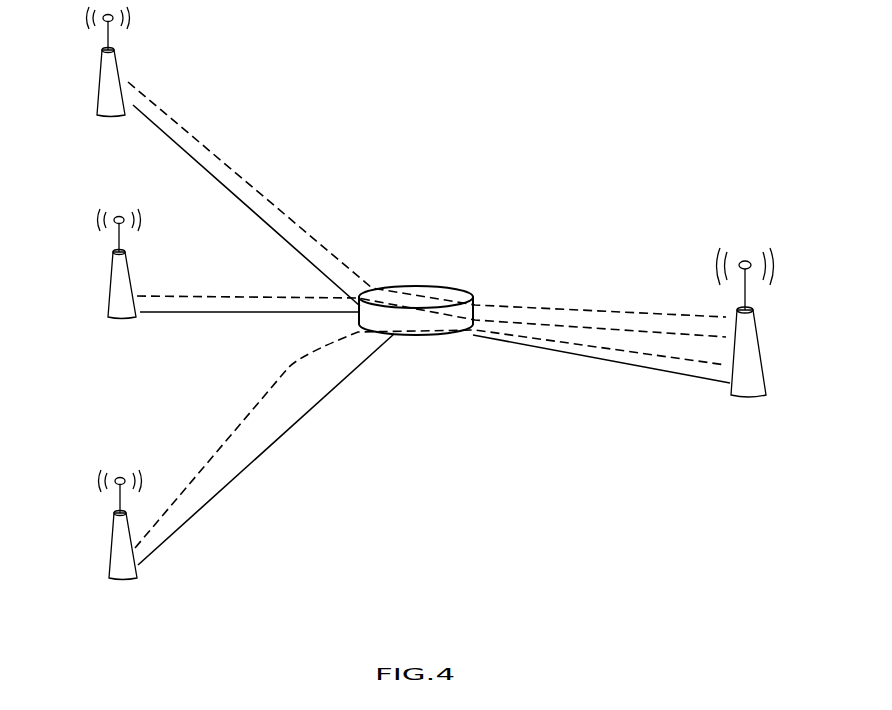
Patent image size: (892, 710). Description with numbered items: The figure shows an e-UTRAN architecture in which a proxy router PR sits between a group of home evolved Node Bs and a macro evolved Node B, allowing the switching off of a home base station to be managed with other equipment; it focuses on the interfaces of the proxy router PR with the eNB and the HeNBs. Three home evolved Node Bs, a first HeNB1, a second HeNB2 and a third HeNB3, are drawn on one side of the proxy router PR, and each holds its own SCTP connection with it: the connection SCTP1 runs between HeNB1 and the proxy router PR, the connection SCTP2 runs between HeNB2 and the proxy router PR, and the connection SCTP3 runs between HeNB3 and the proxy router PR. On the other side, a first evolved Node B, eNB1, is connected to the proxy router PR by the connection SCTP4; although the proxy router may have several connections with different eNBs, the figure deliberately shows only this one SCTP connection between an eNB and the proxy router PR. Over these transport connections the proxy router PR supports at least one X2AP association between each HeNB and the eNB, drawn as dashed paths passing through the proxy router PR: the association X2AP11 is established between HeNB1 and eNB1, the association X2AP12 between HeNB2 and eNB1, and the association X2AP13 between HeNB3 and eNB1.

The first HeNB HeNB1 is at (98, 118).
The second HeNB HeNB2 is at (106, 322).
The third HeNB HeNB3 is at (107, 578).
The first eNB eNB1 is at (770, 365).
The proxy router PR is at (411, 288).
The SCTP connection SCTP1 is at (167, 143).
The SCTP connection SCTP2 is at (195, 316).
The SCTP connection SCTP3 is at (330, 402).
The SCTP connection SCTP4 is at (532, 355).
The X2AP association X2AP11 is at (313, 228).
The X2AP association X2AP12 is at (231, 293).
The X2AP association X2AP13 is at (213, 437).